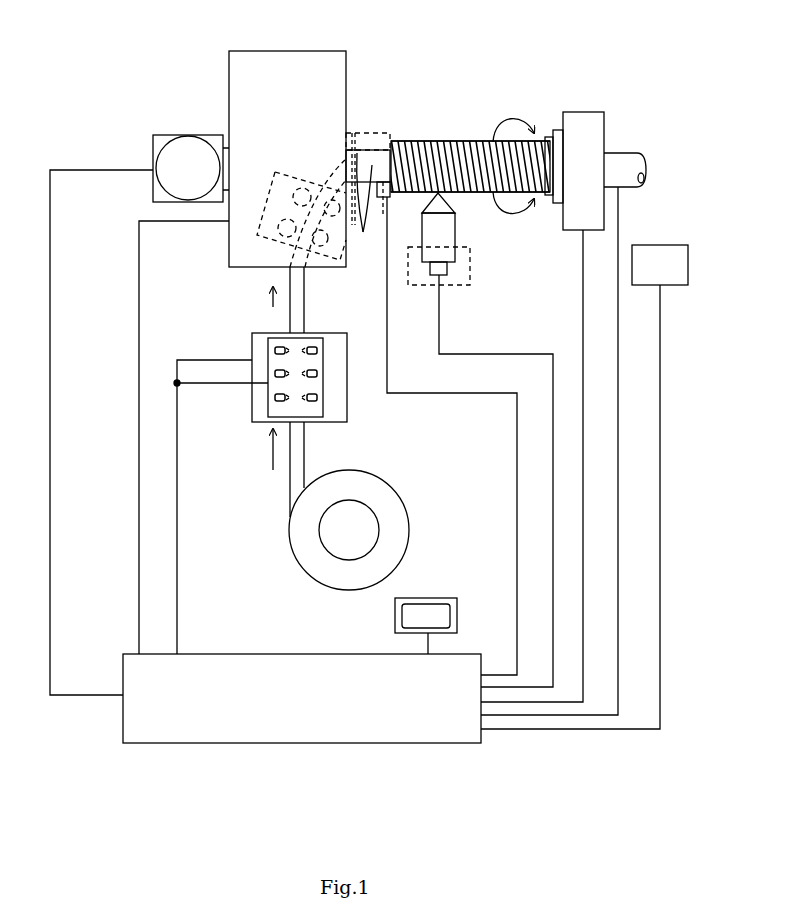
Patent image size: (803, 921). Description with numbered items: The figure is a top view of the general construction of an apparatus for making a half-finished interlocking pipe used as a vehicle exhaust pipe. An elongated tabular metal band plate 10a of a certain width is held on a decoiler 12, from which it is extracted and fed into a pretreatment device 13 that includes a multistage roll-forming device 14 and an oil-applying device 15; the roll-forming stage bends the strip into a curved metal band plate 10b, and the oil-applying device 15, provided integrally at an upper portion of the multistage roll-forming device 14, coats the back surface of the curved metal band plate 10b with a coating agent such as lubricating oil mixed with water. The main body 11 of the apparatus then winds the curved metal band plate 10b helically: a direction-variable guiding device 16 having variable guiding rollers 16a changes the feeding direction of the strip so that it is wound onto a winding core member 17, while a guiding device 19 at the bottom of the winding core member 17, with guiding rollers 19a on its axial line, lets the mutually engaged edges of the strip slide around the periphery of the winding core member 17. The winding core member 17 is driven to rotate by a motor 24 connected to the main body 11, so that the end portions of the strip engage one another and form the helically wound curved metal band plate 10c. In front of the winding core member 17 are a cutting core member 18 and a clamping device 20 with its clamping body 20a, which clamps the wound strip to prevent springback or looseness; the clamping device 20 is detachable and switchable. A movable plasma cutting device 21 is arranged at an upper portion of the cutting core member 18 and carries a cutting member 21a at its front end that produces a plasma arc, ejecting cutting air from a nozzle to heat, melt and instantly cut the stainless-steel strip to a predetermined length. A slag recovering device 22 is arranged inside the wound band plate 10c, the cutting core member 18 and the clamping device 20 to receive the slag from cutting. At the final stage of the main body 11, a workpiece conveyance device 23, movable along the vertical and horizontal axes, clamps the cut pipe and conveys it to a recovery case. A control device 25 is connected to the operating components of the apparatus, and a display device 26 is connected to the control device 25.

The tabular metal band plate 10a is at (312, 443).
The curved metal band plate 10b is at (288, 316).
The helically wound curved metal band plate 10c is at (428, 138).
The main body of the apparatus 11 is at (300, 51).
The decoiler 12 is at (300, 540).
The pretreatment device 13 is at (350, 387).
The multistage roll-forming device 14 is at (258, 406).
The oil-applying device 15 is at (313, 362).
The direction-variable guiding device 16 is at (268, 238).
The variable guiding rollers 16a is at (316, 186).
The winding core member 17 is at (407, 143).
The cutting core member 18 is at (462, 145).
The winding guiding device 19 is at (370, 131).
The winding guiding rollers 19a is at (371, 202).
The clamping device 20 is at (578, 130).
The clamping body 20a is at (552, 206).
The plasma cutting device 21 is at (470, 283).
The cutting member 21a is at (445, 205).
The slag recovering device 22 is at (622, 152).
The workpiece conveyance device 23 is at (670, 286).
The motor 24 is at (160, 135).
The control device 25 is at (455, 744).
The display device 26 is at (443, 598).